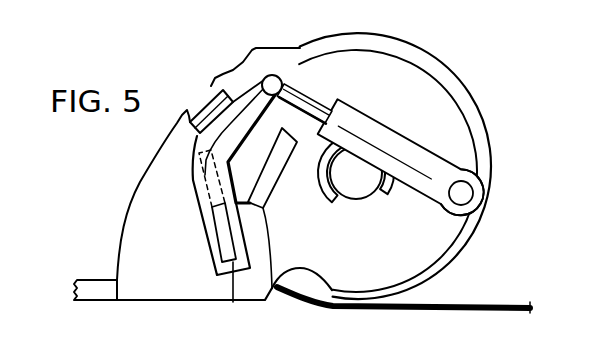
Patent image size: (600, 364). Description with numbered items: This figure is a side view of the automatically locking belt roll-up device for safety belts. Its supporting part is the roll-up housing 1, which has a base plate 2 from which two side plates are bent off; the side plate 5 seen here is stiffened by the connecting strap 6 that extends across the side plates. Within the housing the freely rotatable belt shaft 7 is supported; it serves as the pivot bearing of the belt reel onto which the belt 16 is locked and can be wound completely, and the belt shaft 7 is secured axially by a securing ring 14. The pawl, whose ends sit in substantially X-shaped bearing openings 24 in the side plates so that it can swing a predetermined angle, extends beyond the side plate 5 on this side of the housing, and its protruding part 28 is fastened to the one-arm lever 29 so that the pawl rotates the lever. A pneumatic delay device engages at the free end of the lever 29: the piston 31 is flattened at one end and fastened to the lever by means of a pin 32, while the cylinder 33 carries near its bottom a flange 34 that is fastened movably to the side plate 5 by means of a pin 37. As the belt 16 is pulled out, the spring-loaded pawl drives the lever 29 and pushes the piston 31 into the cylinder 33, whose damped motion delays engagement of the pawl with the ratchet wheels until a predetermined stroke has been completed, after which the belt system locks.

The roll-up housing 1 is at (164, 299).
The base plate 2 is at (90, 294).
The side plate 5 is at (437, 100).
The connecting strap 6 is at (204, 113).
The belt shaft 7 is at (355, 188).
The securing ring 14 is at (329, 202).
The belt 16 is at (493, 306).
The bearing openings 24 is at (272, 288).
The protruding part of pawl 28 is at (233, 302).
The one-arm lever 29 is at (200, 207).
The piston 31 is at (313, 103).
The pin 32 is at (272, 85).
The cylinder 33 is at (377, 132).
The flange 34 is at (474, 178).
The pin 37 is at (468, 197).